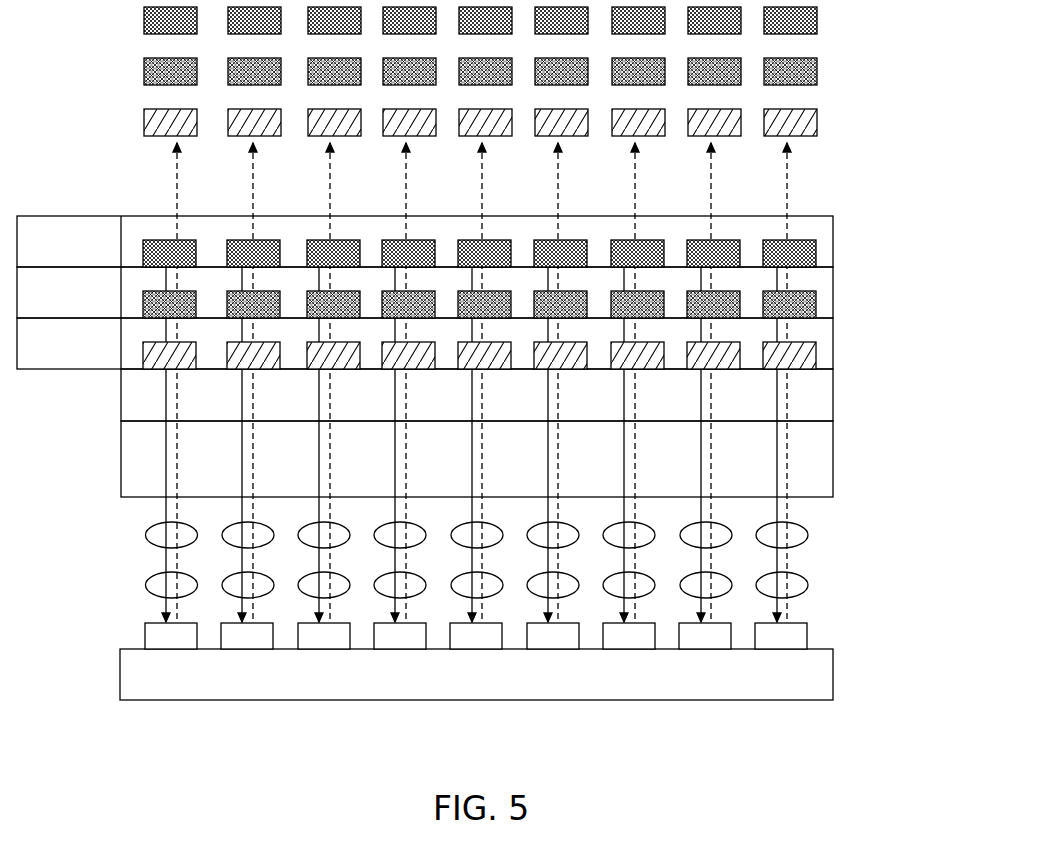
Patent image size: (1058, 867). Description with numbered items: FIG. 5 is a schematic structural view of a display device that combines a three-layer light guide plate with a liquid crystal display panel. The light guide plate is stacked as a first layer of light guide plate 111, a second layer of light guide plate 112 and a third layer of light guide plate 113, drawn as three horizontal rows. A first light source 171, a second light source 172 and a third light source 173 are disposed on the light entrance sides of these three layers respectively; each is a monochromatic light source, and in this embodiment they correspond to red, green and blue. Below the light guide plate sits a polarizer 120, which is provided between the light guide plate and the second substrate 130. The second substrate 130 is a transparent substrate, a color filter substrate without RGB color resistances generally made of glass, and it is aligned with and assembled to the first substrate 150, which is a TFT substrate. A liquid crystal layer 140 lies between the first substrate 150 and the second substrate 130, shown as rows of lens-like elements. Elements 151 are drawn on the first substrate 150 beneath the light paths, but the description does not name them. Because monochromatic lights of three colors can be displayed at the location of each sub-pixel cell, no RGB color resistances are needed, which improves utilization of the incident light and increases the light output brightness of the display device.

The first layer of light guide plate 111 is at (476, 230).
The second layer of light guide plate 112 is at (476, 279).
The third layer of light guide plate 113 is at (476, 327).
The polarizer 120 is at (528, 387).
The second substrate 130 is at (528, 459).
The liquid crystal layer 140 is at (541, 558).
The first substrate 150 is at (527, 656).
The light emitting elements 151 is at (540, 611).
The first light source 171 is at (427, 248).
The second light source 172 is at (427, 301).
The third light source 173 is at (427, 351).